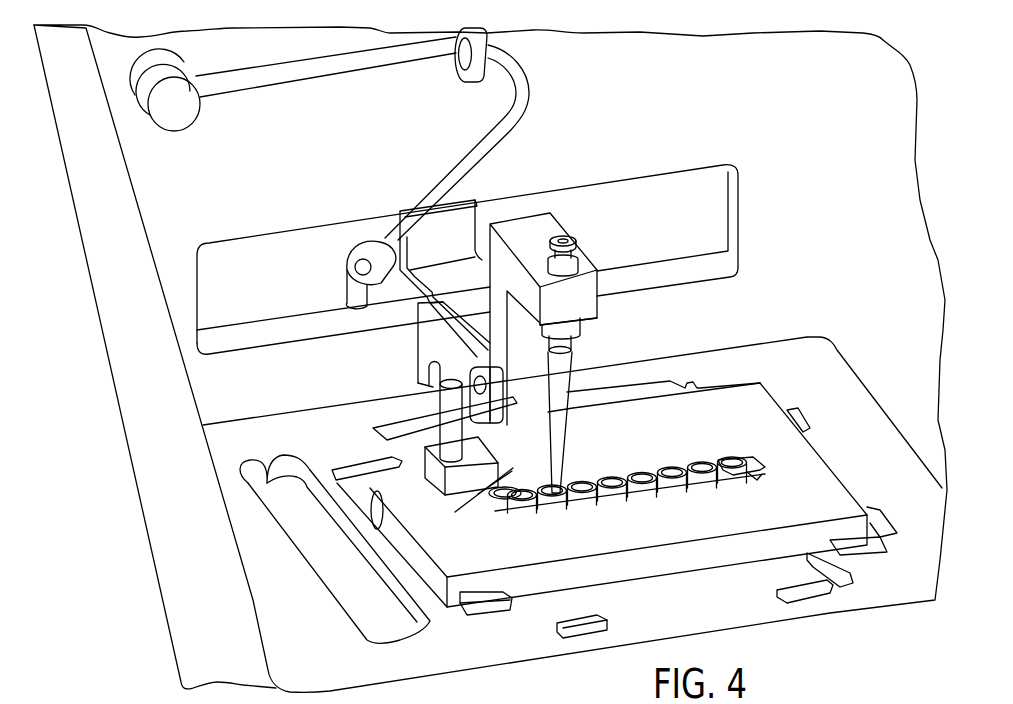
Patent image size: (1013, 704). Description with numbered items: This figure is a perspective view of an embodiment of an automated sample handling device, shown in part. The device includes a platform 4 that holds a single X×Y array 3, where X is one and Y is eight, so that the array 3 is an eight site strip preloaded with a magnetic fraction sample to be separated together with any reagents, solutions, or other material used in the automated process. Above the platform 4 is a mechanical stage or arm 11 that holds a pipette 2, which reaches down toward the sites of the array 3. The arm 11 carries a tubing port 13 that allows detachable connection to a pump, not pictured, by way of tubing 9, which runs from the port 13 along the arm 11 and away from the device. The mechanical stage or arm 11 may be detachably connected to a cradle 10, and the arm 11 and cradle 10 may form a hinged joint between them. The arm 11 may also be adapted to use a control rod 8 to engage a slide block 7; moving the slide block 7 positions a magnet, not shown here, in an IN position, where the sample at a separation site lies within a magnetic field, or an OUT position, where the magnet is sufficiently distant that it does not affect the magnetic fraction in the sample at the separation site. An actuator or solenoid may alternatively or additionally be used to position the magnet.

The pipette 2 is at (558, 422).
The X×Y array 3 is at (643, 492).
The platform 4 is at (318, 430).
The slide block 7 is at (458, 502).
The control rod 8 is at (438, 401).
The tubing 9 is at (528, 116).
The cradle 10 is at (457, 200).
The arm 11 is at (587, 308).
The tubing port 13 is at (563, 240).